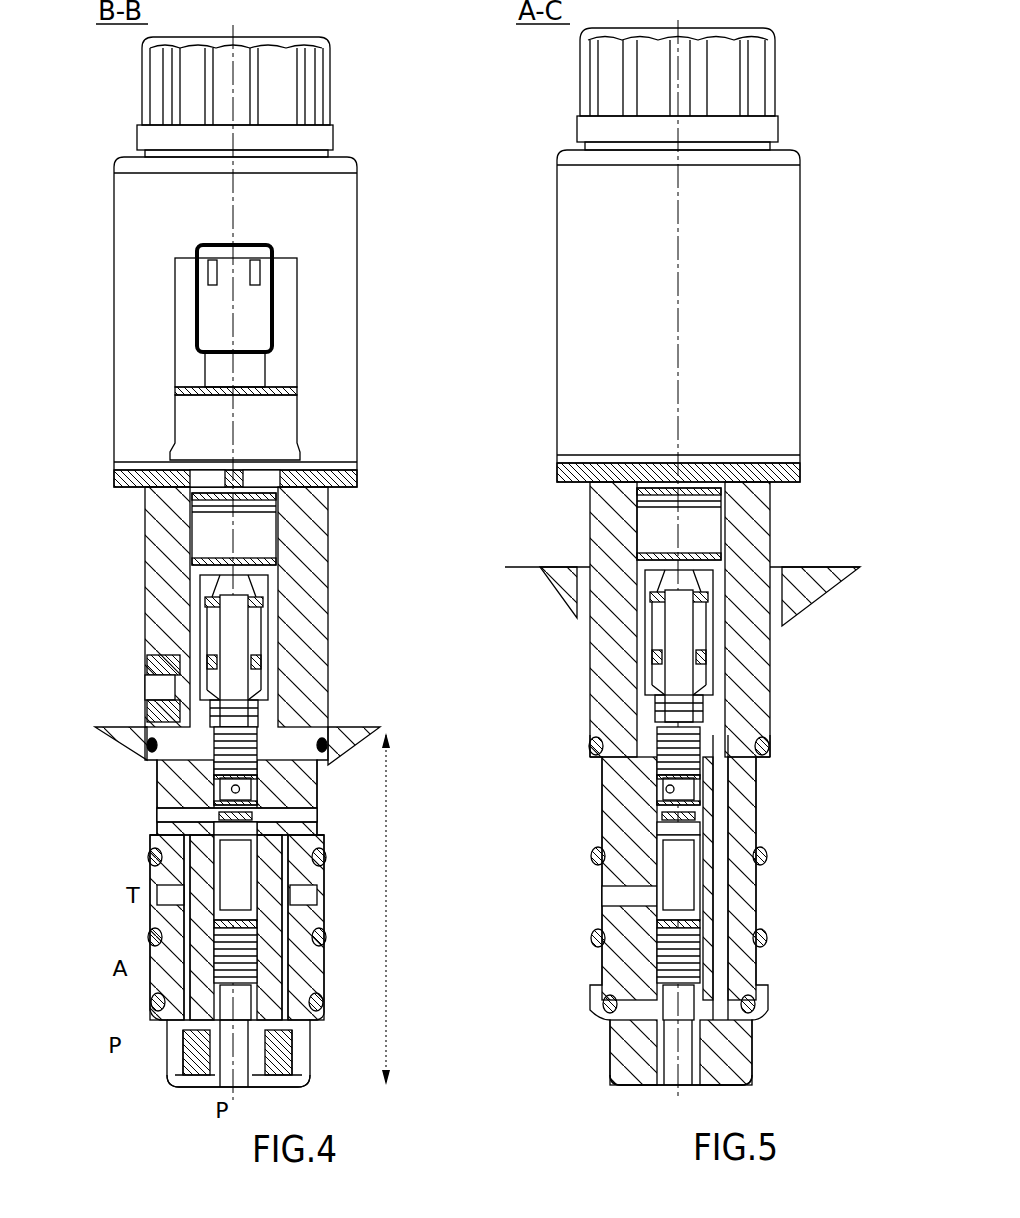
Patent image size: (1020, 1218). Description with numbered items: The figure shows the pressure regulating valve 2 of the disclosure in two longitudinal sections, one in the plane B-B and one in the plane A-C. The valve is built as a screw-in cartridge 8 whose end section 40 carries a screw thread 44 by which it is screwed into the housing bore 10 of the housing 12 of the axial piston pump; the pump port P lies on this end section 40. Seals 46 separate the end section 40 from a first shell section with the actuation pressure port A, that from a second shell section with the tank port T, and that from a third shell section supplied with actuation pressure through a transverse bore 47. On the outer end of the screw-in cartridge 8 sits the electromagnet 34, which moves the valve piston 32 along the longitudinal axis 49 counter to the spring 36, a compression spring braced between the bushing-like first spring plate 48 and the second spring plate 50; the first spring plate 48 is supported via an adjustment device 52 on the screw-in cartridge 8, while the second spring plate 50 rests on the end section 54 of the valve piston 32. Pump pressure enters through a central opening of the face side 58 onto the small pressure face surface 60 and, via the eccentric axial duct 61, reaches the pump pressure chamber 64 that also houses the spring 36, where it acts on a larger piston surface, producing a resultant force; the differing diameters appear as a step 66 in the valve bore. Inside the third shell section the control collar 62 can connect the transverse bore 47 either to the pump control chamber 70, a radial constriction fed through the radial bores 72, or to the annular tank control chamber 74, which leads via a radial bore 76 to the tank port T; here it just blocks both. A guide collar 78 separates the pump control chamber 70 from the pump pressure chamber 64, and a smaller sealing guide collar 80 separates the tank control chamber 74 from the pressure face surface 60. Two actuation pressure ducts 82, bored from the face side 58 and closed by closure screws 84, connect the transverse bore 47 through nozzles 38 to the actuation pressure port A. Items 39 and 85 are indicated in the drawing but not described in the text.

In FIG. 4, the pressure regulating valve 2 is at (414, 132).
In FIG. 5, the pressure regulating valve 2 is at (677, 89).
In FIG. 4, the screw-in cartridge 8 is at (178, 612).
In FIG. 5, the screw-in cartridge 8 is at (768, 652).
In FIG. 5, the housing bore 10 is at (790, 566).
In FIG. 5, the housing 12 is at (812, 600).
In FIG. 4, the valve piston 32 is at (700, 840).
In FIG. 4, the electromagnet 34 is at (332, 300).
In FIG. 5, the electromagnet 34 is at (678, 316).
In FIG. 4, the spring 36 is at (648, 598).
In FIG. 5, the spring 36 is at (679, 656).
In FIG. 4, the nozzle 38 is at (150, 942).
In FIG. 4, the mounting flange 39 is at (150, 745).
In FIG. 4, the end section 40 is at (146, 1075).
In FIG. 5, the end section 40 is at (790, 1050).
In FIG. 4, the screw thread 44 is at (300, 1075).
In FIG. 4, the seal 46 is at (705, 866).
In FIG. 4, the transverse bore 47 is at (178, 828).
In FIG. 4, the first spring plate 48 is at (705, 652).
In FIG. 5, the first spring plate 48 is at (679, 708).
In FIG. 4, the longitudinal axis 49 is at (678, 228).
In FIG. 4, the second spring plate 50 is at (645, 560).
In FIG. 5, the second spring plate 50 is at (679, 632).
In FIG. 4, the adjustment device 52 is at (130, 650).
In FIG. 4, the end section of the valve piston 54 is at (640, 520).
In FIG. 5, the end section of the valve piston 54 is at (679, 524).
In FIG. 4, the face side 58 is at (645, 1086).
In FIG. 4, the pressure face surface 60 is at (153, 1000).
In FIG. 5, the pressure face surface 60 is at (760, 1012).
In FIG. 5, the eccentric axial duct 61 is at (720, 890).
In FIG. 4, the control collar 62 is at (690, 812).
In FIG. 5, the control collar 62 is at (678, 823).
In FIG. 4, the pump pressure chamber 64 is at (700, 692).
In FIG. 5, the pump pressure chamber 64 is at (680, 619).
In FIG. 4, the step 66 is at (700, 880).
In FIG. 4, the pump control chamber 70 is at (215, 792).
In FIG. 5, the pump control chamber 70 is at (746, 776).
In FIG. 4, the radial bore 72 is at (670, 790).
In FIG. 5, the radial bore 72 is at (678, 790).
In FIG. 5, the tank control chamber 74 is at (744, 868).
In FIG. 4, the radial bore 76 is at (260, 907).
In FIG. 5, the radial bore 76 is at (678, 970).
In FIG. 4, the guide collar 78 is at (660, 725).
In FIG. 5, the guide collar 78 is at (678, 751).
In FIG. 5, the sealing guide collar 80 is at (766, 942).
In FIG. 4, the actuation pressure duct 82 is at (150, 856).
In FIG. 4, the closure screw 84 is at (245, 1085).
In FIG. 4, the length 85 is at (375, 909).